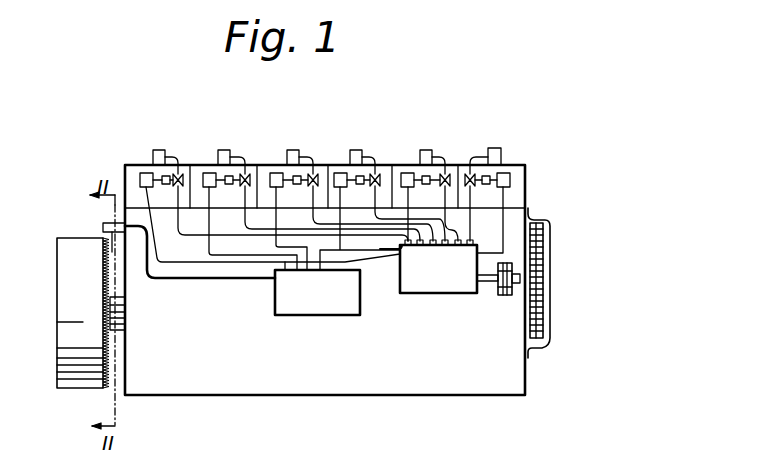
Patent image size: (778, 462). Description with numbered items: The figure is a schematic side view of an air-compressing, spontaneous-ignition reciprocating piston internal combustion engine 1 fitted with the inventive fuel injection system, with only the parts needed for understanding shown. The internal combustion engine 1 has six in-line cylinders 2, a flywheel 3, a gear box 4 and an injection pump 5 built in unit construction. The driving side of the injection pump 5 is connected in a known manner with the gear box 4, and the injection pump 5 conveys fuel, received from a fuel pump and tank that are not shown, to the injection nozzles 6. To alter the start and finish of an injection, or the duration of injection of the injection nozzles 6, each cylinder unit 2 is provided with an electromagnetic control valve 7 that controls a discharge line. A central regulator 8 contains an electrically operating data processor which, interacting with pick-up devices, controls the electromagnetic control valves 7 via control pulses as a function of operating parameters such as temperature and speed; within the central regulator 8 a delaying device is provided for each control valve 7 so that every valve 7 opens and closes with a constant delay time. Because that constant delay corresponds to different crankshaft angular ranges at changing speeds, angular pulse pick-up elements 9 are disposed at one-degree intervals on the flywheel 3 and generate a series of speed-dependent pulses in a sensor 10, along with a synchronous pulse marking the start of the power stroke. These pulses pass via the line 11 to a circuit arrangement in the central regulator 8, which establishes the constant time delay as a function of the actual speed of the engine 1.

The internal combustion engine 1 is at (568, 174).
The cylinders 2 is at (200, 168).
The flywheel 3 is at (62, 345).
The gear box 4 is at (547, 303).
The injection pump 5 is at (461, 290).
The injection nozzles 6 is at (153, 150).
The electromagnetic control valve 7 is at (175, 183).
The central regulator 8 is at (303, 308).
The angular pulse pick-up elements 9 is at (102, 365).
The sensor 10 is at (103, 225).
The line 11 is at (197, 280).